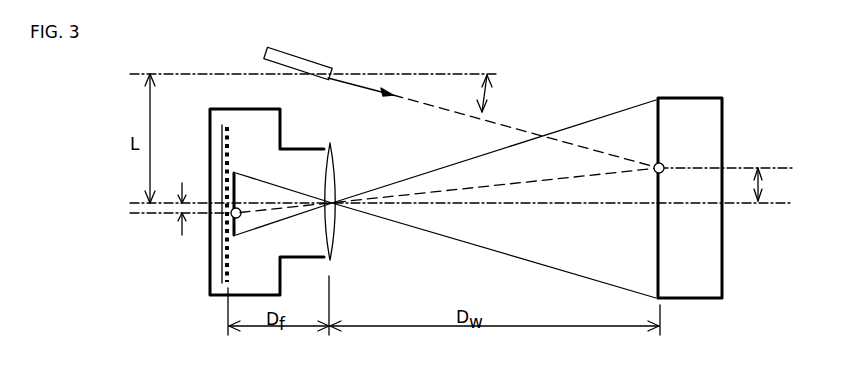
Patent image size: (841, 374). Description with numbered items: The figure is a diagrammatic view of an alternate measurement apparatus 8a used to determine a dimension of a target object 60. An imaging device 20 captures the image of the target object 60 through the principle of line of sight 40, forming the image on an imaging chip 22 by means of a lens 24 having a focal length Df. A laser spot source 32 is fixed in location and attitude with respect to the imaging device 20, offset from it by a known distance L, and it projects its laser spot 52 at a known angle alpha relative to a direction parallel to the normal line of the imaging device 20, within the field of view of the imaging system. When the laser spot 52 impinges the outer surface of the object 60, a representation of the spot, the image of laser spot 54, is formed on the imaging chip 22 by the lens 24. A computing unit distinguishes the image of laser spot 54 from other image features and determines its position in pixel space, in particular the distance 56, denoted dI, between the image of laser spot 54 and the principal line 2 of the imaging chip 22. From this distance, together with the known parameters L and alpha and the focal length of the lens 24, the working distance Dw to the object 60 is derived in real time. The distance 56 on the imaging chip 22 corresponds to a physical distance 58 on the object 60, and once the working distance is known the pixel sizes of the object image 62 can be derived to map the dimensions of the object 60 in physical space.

The principal line 2 is at (555, 203).
The measurement apparatus 8a is at (492, 103).
The imaging device 20 is at (210, 295).
The imaging chip 22 is at (222, 267).
The lens 24 is at (337, 163).
The laser spot source 32 is at (297, 65).
The line of sight 40 is at (608, 110).
The laser spot 52 is at (512, 125).
The image of laser spot 54 is at (231, 216).
The distance dI 56 is at (182, 209).
The physical distance 58 is at (765, 185).
The target object 60 is at (712, 148).
The object image 62 is at (232, 183).